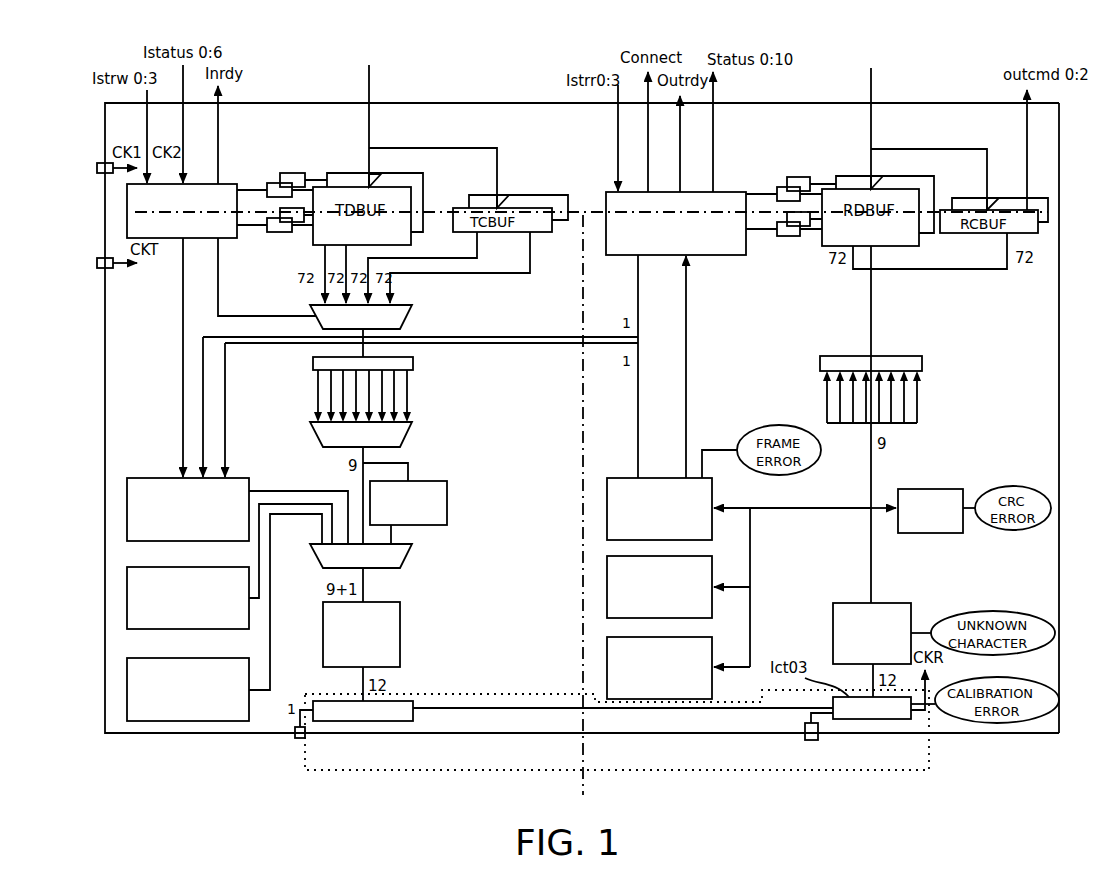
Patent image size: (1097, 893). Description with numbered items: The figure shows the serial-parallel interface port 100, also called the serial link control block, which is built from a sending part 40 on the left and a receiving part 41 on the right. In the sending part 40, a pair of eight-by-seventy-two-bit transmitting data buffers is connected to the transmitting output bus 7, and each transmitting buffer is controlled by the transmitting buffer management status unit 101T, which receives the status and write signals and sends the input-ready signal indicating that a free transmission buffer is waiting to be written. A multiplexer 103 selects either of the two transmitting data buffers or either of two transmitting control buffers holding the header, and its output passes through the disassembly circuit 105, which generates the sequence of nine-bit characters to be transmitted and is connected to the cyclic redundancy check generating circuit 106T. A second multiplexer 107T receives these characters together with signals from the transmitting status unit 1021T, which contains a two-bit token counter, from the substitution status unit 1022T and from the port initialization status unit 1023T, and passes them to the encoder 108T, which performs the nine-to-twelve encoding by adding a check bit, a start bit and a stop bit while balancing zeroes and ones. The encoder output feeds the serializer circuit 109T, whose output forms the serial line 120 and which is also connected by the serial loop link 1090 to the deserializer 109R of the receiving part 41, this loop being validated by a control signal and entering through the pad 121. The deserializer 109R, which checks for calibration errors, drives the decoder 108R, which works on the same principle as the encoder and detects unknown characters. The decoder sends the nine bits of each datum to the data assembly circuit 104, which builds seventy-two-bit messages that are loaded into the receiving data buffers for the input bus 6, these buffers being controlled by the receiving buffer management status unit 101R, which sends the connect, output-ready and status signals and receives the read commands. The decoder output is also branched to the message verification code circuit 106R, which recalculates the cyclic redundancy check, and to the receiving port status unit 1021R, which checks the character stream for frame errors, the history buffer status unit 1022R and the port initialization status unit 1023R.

The sending part 40 is at (235, 734).
The receiving part 41 is at (1050, 672).
The C2LB output bus 7 is at (372, 92).
The L2CB input bus 6 is at (873, 92).
The transmitting buffer management status unit 101T is at (228, 184).
The receiving buffer management status unit 101R is at (733, 192).
The multiplexer 103 is at (400, 318).
The data assembly circuit 104 is at (912, 356).
The disassembly circuit 105 is at (398, 432).
The cyclic redundancy check character generating circuit 106T is at (447, 507).
The message verification code circuit 106R is at (945, 497).
The second multiplexer 107T is at (398, 560).
The encoder 108T is at (400, 640).
The decoder 108R is at (845, 632).
The serializer circuit 109T is at (357, 720).
The deserializer 109R is at (870, 712).
The transmitting status unit 1021T is at (153, 488).
The substitution status unit 1022T is at (140, 600).
The port initialization status unit 1023T is at (140, 690).
The status unit of the receiving port 1021R is at (618, 508).
The history buffer status unit 1022R is at (618, 600).
The port initialization status unit 1023R is at (618, 697).
The serial line 120 is at (294, 738).
The receiver pad 121 is at (805, 735).
The serial loop link 1090 is at (660, 710).
The port 100 is at (948, 743).